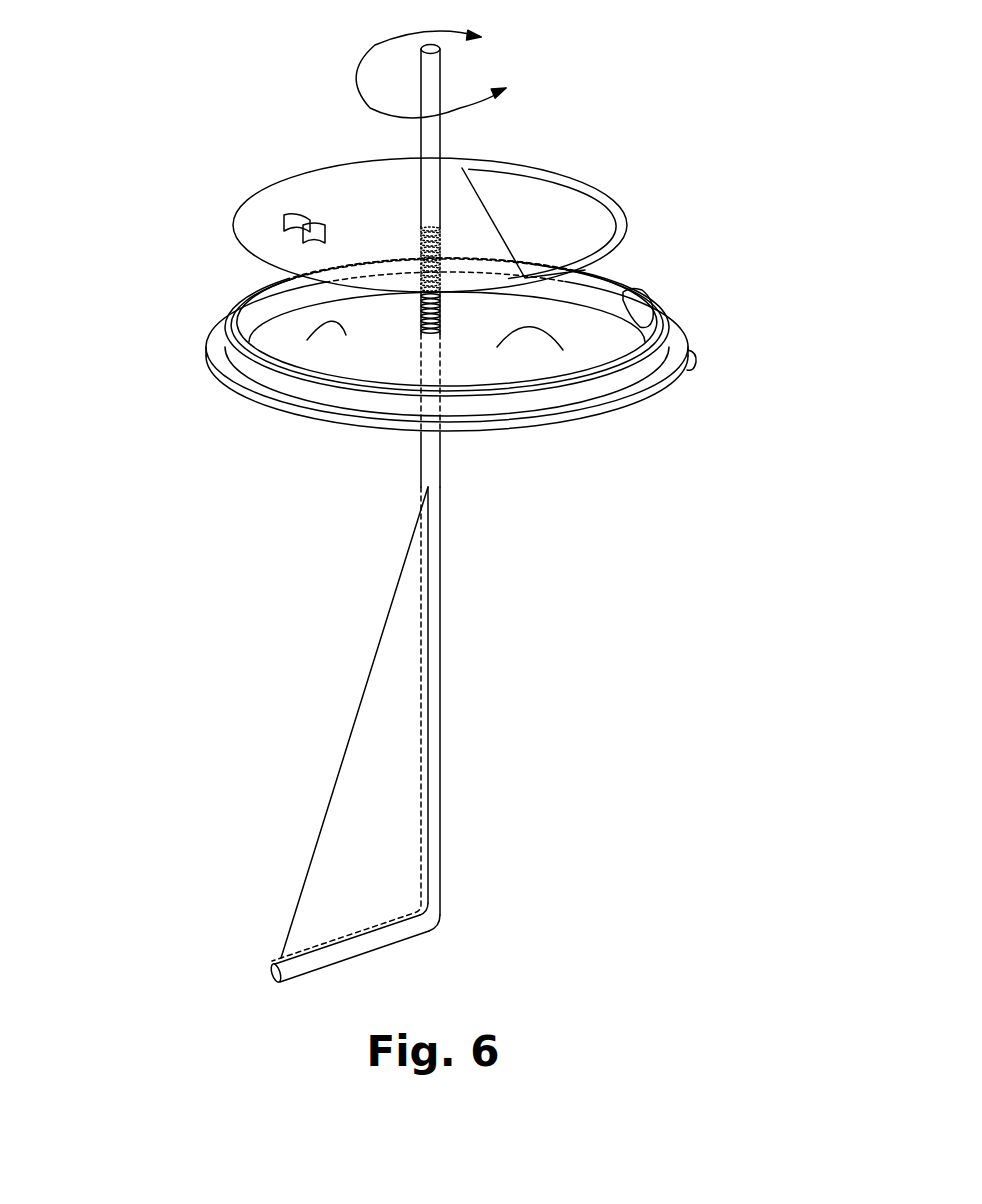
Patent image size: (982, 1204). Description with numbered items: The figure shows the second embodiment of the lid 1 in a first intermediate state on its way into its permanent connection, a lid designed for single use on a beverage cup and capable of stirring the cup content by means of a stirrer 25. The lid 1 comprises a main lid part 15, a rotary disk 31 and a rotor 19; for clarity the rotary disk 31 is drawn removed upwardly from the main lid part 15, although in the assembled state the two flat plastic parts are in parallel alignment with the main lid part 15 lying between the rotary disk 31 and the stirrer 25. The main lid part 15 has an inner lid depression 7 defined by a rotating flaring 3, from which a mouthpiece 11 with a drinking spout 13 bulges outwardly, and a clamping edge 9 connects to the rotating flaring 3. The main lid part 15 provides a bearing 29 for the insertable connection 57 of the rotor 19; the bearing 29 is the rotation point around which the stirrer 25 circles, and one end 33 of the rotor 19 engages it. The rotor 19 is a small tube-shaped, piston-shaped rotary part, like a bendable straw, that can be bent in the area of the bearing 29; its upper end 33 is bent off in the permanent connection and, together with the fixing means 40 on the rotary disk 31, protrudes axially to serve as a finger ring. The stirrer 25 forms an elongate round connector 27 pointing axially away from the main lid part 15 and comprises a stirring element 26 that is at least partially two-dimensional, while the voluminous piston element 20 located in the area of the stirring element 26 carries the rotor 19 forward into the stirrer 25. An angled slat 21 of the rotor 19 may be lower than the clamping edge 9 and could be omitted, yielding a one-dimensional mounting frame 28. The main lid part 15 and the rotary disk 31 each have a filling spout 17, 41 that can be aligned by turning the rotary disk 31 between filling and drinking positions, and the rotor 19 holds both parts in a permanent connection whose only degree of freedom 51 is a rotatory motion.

The lid 1 is at (168, 170).
The rotating flaring 3 is at (253, 358).
The inner lid depression 7 is at (563, 350).
The clamping edge 9 is at (633, 397).
The mouthpiece 11 is at (673, 355).
The drinking spout 13 is at (643, 303).
The main lid part 15 is at (228, 360).
The filling spout 17 is at (346, 335).
The rotor 19 is at (430, 445).
The piston element 20 is at (438, 663).
The slat 21 is at (390, 932).
The stirrer 25 is at (408, 870).
The stirring element 26 is at (397, 822).
The round connector 27 is at (450, 232).
The mounting frame 28 is at (303, 961).
The bearing 29 is at (455, 320).
The rotary disk 31 is at (352, 170).
The upper end of the rotor 33 is at (428, 195).
The fixing means 40 is at (283, 203).
The filling spout 41 is at (582, 222).
The degree of freedom 51 is at (366, 44).
The connection 57 is at (226, 303).